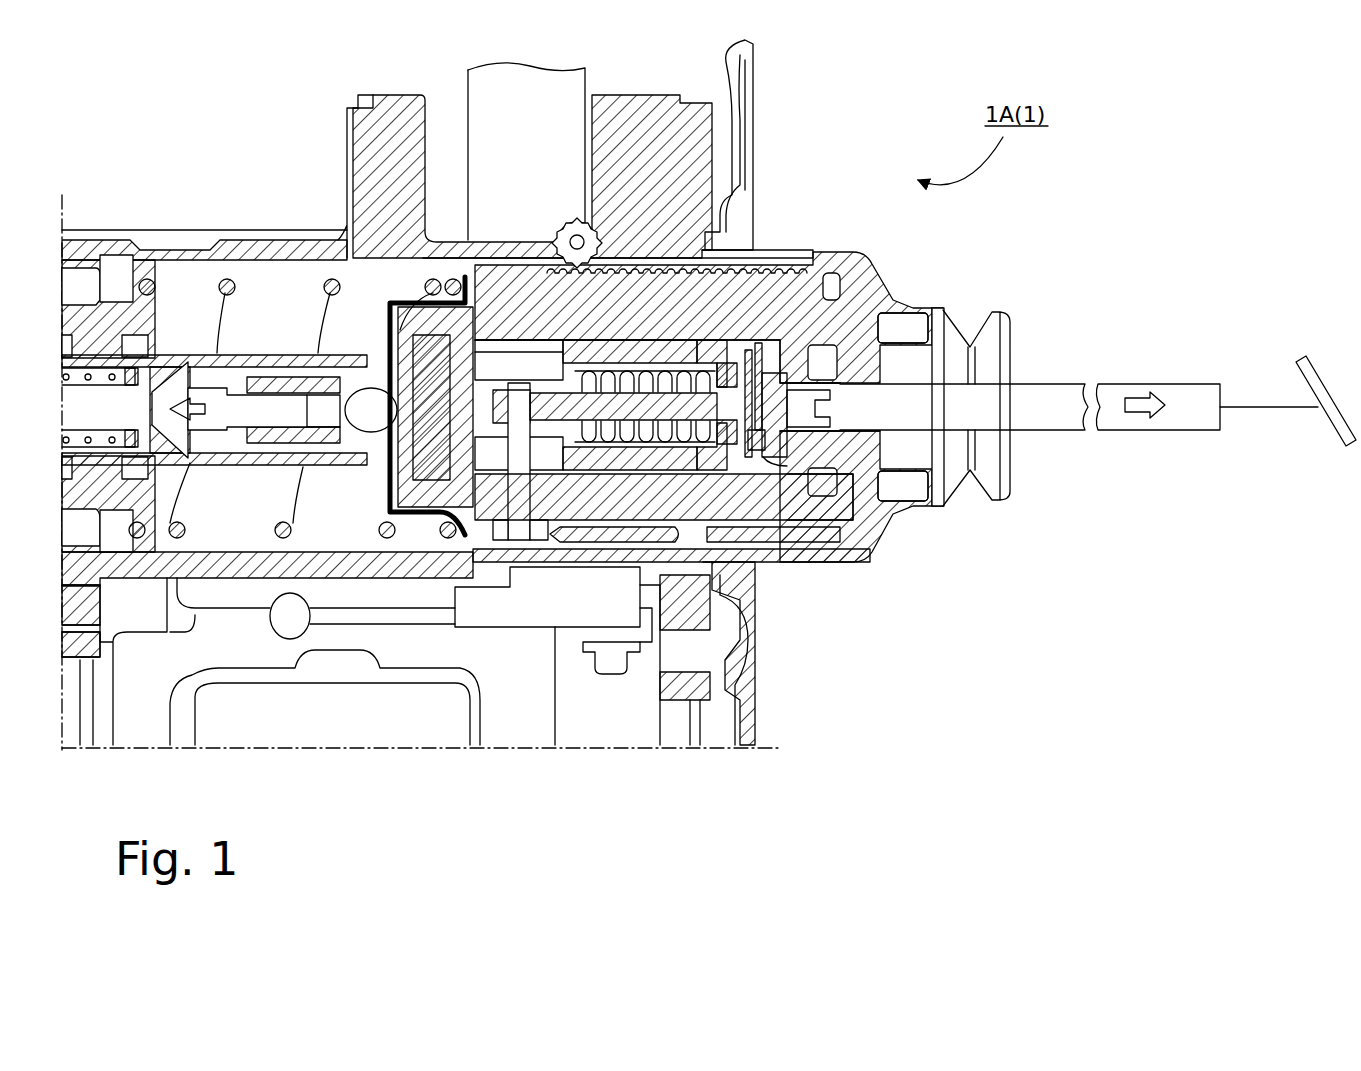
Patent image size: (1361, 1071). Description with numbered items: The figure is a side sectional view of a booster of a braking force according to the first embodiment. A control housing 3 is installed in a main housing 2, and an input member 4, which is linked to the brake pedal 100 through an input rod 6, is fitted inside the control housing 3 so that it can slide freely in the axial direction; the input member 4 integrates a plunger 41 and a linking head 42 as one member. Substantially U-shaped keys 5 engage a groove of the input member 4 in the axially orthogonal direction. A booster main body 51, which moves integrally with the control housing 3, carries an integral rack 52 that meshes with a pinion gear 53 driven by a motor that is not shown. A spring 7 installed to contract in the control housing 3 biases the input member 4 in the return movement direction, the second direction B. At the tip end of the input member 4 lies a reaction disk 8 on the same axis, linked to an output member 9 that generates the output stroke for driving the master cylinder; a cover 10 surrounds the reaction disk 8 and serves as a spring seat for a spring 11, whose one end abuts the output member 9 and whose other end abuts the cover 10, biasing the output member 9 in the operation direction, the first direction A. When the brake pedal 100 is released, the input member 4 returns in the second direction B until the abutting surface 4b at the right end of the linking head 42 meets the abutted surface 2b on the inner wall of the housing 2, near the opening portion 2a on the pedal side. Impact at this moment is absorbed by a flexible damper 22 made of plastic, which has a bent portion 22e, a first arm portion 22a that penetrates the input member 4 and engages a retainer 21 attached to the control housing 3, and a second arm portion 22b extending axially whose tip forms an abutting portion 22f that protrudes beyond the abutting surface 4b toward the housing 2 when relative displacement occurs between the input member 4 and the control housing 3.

The main housing 2 is at (880, 256).
The opening portion 2a is at (860, 435).
The abutted surface 2b is at (838, 383).
The control housing 3 is at (797, 348).
The input member 4 is at (687, 290).
The abutting surface 4b is at (840, 358).
The key 5 is at (630, 378).
The input rod 6 is at (1043, 384).
The spring 7 is at (632, 440).
The reaction disk 8 is at (430, 350).
The output member 9 is at (270, 352).
The cover 10 is at (387, 485).
The spring 11 is at (292, 490).
The retainer 21 is at (757, 350).
The flexible damper 22 is at (852, 480).
The first arm portion 22a is at (737, 440).
The second arm portion 22b is at (807, 478).
The bent portion 22e is at (752, 462).
The abutting portion 22f is at (890, 490).
The plunger 41 is at (568, 412).
The linking head 42 is at (772, 447).
The booster main body 51 is at (840, 290).
The rack 52 is at (655, 268).
The pinion gear 53 is at (562, 234).
The brake pedal 100 is at (1325, 372).
The first direction A is at (187, 400).
The second direction B is at (1143, 407).